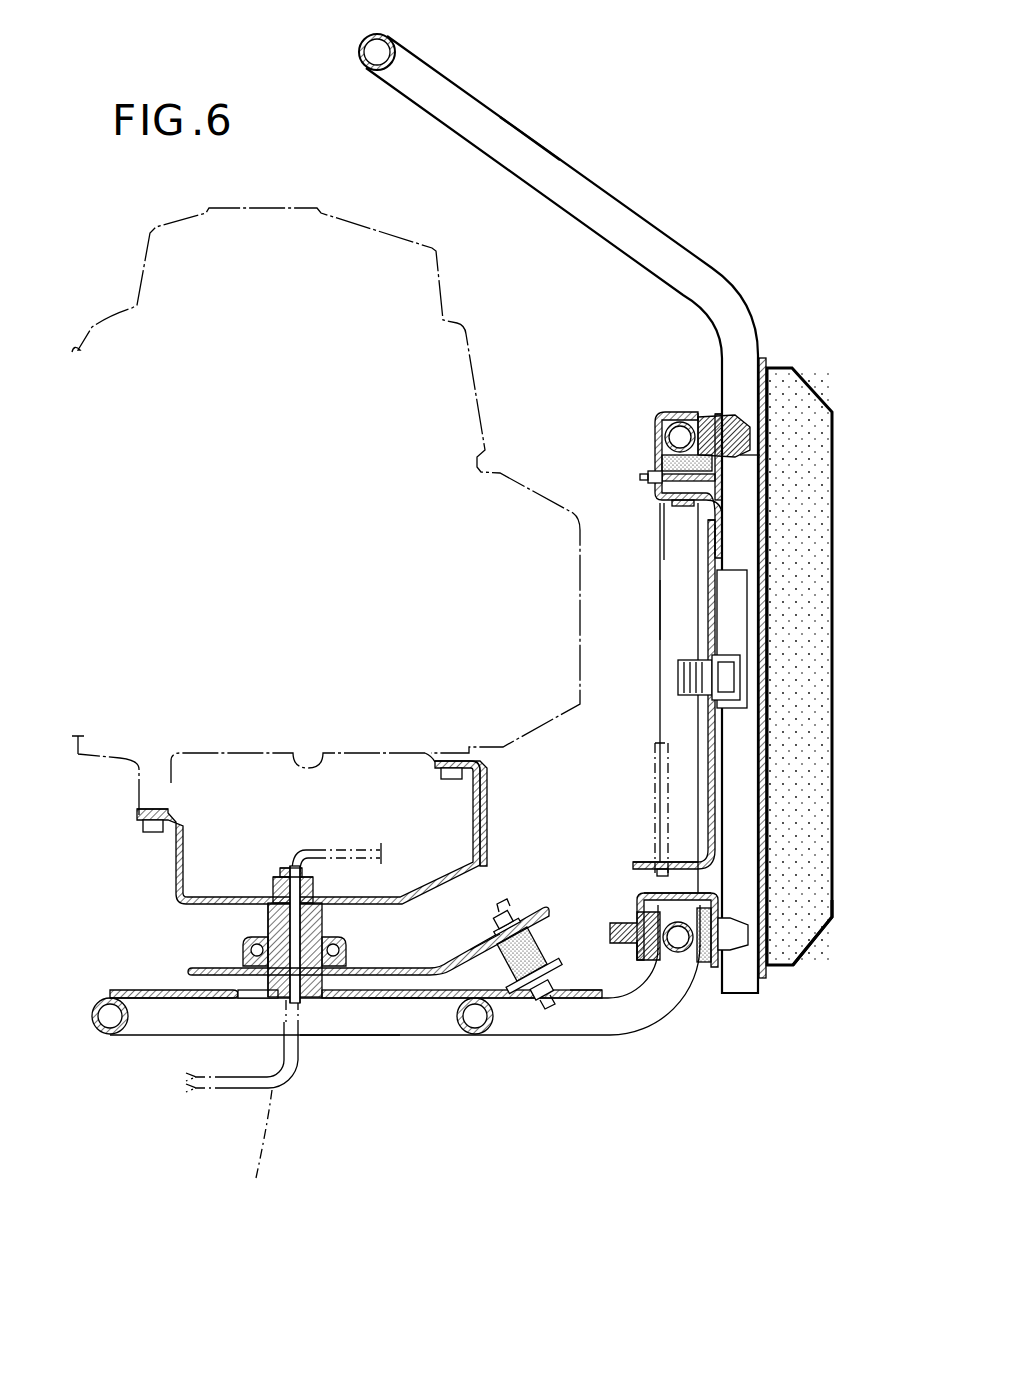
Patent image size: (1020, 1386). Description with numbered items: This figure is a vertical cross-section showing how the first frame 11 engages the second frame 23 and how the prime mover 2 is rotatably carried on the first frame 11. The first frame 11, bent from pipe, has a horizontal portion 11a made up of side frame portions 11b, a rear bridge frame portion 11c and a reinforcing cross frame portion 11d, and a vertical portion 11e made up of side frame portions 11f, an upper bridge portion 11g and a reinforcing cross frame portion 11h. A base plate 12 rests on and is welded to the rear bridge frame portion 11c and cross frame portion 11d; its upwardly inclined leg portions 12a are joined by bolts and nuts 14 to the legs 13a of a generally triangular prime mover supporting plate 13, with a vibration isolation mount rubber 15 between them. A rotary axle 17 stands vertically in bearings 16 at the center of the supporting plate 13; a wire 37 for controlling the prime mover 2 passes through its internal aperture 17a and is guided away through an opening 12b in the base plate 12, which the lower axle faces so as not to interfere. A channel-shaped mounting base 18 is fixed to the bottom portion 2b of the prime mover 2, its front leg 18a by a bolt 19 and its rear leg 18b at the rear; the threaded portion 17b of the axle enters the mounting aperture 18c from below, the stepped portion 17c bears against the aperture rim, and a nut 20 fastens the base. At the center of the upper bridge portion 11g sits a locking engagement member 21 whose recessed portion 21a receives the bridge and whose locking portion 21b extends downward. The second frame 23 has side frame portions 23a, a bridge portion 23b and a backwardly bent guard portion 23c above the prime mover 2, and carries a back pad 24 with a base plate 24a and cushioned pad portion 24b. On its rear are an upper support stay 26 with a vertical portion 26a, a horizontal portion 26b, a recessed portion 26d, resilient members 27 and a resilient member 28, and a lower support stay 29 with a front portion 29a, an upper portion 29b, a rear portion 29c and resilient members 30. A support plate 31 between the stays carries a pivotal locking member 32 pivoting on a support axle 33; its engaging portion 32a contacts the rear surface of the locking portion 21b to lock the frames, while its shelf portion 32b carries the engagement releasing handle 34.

The prime mover 2 is at (470, 372).
The bottom portion of the prime mover 2b is at (297, 745).
The first frame 11 is at (612, 1043).
The horizontal portion of the first frame 11a is at (345, 1040).
The side frame portion 11b is at (393, 1018).
The rear bridge frame portion 11c is at (103, 1037).
The reinforcing cross frame portion 11d is at (474, 1040).
The vertical portion of the first frame 11e is at (658, 530).
The side frame portion 11f is at (662, 605).
The upper bridge portion 11g is at (672, 424).
The reinforcing cross frame portion 11h is at (680, 953).
The base plate 12 is at (160, 1000).
The leg portion 12a is at (588, 1003).
The opening 12b is at (247, 990).
The prime mover supporting plate 13 is at (431, 980).
The leg 13a is at (535, 910).
The bolts and nuts 14 is at (540, 1010).
The vibration isolation mount rubber 15 is at (502, 958).
The bearings 16 is at (243, 950).
The rotary axle 17 is at (318, 940).
The internal aperture 17a is at (268, 920).
The threaded portion 17b is at (290, 870).
The stepped portion 17c is at (272, 888).
The mounting base 18 is at (488, 852).
The front leg 18a is at (438, 760).
The rear leg 18b is at (160, 812).
The mounting aperture 18c is at (316, 888).
The bolt 19 is at (145, 826).
The nut 20 is at (300, 868).
The locking engagement member 21 is at (650, 500).
The recessed portion 21a is at (652, 470).
The locking portion 21b is at (724, 520).
The second frame 23 is at (744, 262).
The side frame portion 23a is at (766, 556).
The bridge portion 23b is at (392, 42).
The guard portion 23c is at (542, 140).
The back pad 24 is at (836, 422).
The base plate 24a is at (766, 840).
The pad portion 24b is at (805, 670).
The upper support stay 26 is at (735, 420).
The vertical portion 26a is at (752, 438).
The horizontal portion 26b is at (664, 474).
The recessed portion 26d is at (662, 463).
The resilient member 27 is at (762, 474).
The resilient member 28 is at (728, 406).
The lower support stay 29 is at (750, 935).
The front portion 29a is at (712, 952).
The upper portion 29b is at (715, 893).
The rear portion 29c is at (651, 965).
The resilient member 30 is at (643, 920).
The support plate 31 is at (738, 603).
The pivotal locking member 32 is at (724, 745).
The engaging portion 32a is at (706, 542).
The shelf portion 32b is at (712, 858).
The support axle 33 is at (680, 676).
The engagement releasing handle 34 is at (655, 800).
The wire 37 is at (249, 1144).